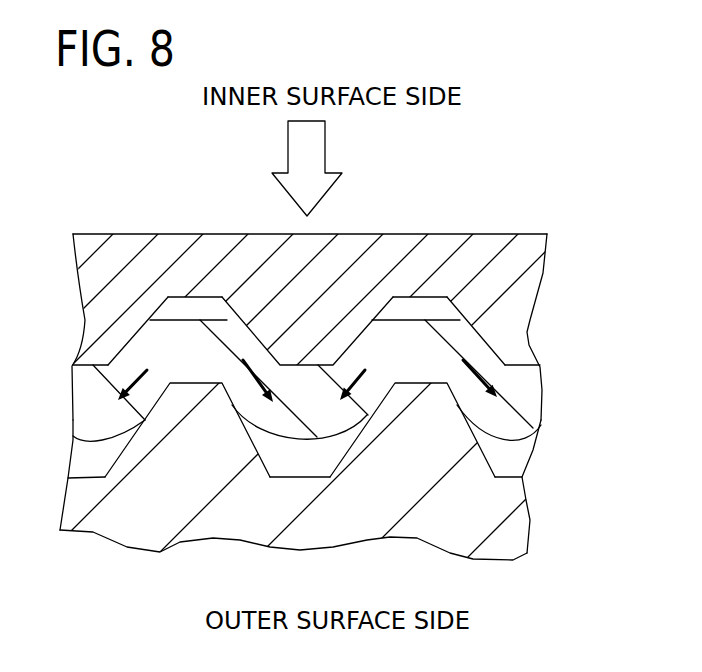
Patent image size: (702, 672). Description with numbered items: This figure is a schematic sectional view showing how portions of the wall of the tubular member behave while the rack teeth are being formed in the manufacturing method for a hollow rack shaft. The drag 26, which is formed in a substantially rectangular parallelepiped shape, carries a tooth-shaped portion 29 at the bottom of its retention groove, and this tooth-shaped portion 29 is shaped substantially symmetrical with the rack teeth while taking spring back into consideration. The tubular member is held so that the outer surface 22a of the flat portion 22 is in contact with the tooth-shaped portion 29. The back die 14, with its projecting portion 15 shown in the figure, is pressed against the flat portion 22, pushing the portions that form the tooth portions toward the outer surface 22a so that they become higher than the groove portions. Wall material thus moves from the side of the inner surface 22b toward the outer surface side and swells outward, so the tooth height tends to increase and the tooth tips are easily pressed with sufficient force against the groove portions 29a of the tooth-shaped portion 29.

The back die 14 is at (500, 234).
The protrusion of upper member 15 is at (343, 327).
The flat portion 22 is at (527, 390).
The outer surface 22a is at (307, 440).
The inner surface 22b is at (421, 320).
The drag 26 is at (73, 500).
The tooth-shaped portion 29 is at (197, 420).
The groove portions 29a is at (300, 478).